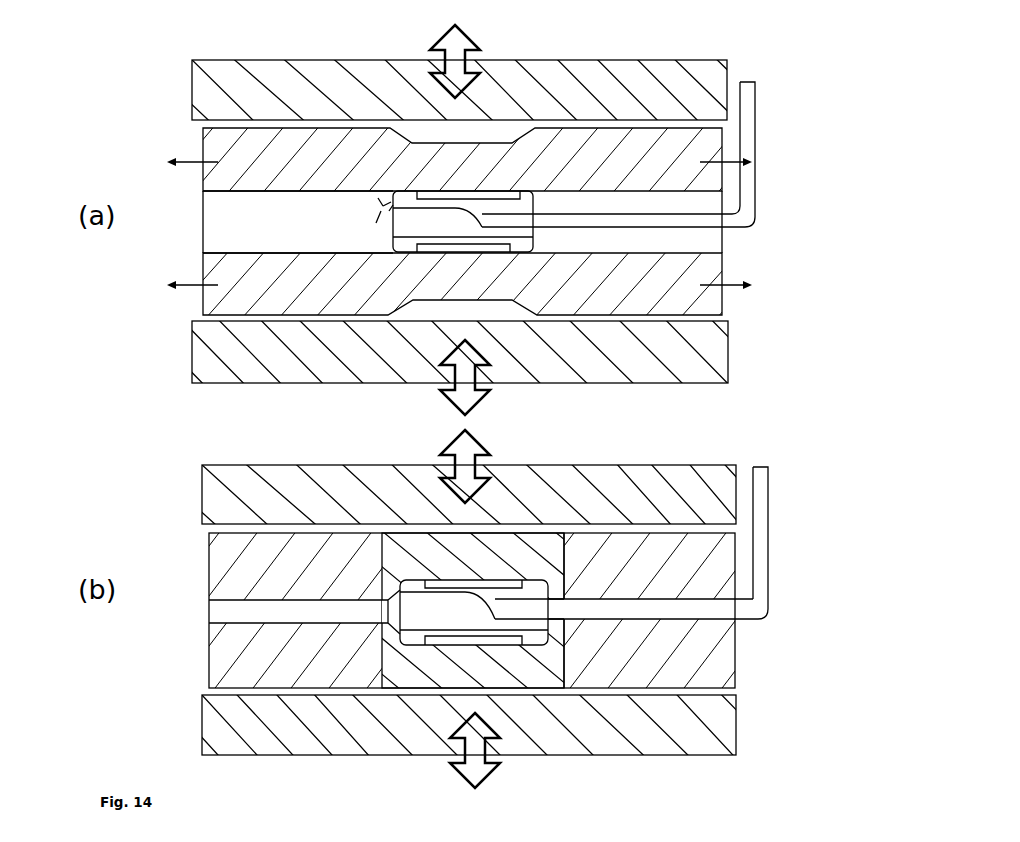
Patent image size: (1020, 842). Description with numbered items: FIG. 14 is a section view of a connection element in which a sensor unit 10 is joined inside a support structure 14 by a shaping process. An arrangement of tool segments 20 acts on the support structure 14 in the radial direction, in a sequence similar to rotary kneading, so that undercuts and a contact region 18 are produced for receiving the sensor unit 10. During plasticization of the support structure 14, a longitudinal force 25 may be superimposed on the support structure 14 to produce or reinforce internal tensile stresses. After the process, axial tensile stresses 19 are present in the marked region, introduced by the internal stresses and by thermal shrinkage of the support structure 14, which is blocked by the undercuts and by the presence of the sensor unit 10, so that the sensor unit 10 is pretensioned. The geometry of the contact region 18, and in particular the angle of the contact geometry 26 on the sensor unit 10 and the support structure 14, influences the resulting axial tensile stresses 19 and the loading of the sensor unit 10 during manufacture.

The sensor unit 10 is at (543, 191).
The support structure 14 is at (700, 268).
The contact region 18 is at (548, 581).
The axial tensile stresses 19 is at (440, 564).
The tool segments 20 is at (213, 92).
The longitudinal force 25 is at (196, 162).
The contact geometry angle 26 is at (375, 200).